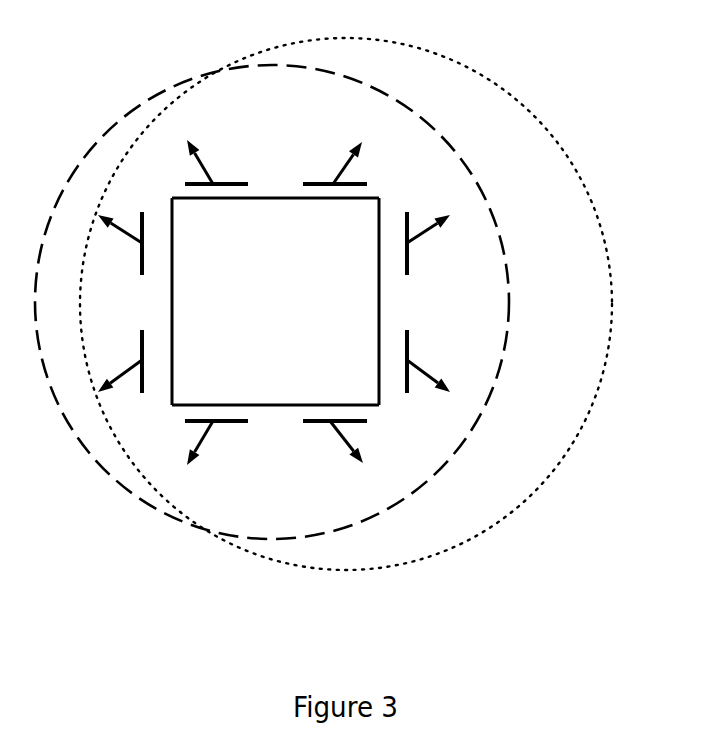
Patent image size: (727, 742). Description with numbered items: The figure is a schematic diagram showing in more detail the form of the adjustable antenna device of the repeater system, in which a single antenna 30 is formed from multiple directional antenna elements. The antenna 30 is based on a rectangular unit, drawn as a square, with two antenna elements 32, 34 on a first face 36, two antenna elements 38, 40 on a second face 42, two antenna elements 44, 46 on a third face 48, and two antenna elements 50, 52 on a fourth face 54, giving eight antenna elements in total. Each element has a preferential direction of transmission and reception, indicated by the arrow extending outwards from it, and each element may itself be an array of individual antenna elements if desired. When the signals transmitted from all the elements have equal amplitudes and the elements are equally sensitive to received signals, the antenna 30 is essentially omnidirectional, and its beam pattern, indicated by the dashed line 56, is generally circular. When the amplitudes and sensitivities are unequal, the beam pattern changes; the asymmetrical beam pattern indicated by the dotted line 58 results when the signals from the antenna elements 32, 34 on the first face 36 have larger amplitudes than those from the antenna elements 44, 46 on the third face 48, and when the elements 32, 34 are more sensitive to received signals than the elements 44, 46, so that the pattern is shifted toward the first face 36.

The antenna 30 is at (275, 250).
The antenna element 32 is at (407, 262).
The antenna element 34 is at (407, 347).
The first face 36 is at (379, 300).
The antenna element 38 is at (325, 421).
The antenna element 40 is at (225, 421).
The second face 42 is at (277, 405).
The antenna element 44 is at (142, 347).
The antenna element 46 is at (142, 262).
The third face 48 is at (172, 300).
The antenna element 50 is at (228, 184).
The antenna element 52 is at (323, 184).
The fourth face 54 is at (275, 198).
The dashed line 56 is at (450, 147).
The dotted line 58 is at (535, 113).